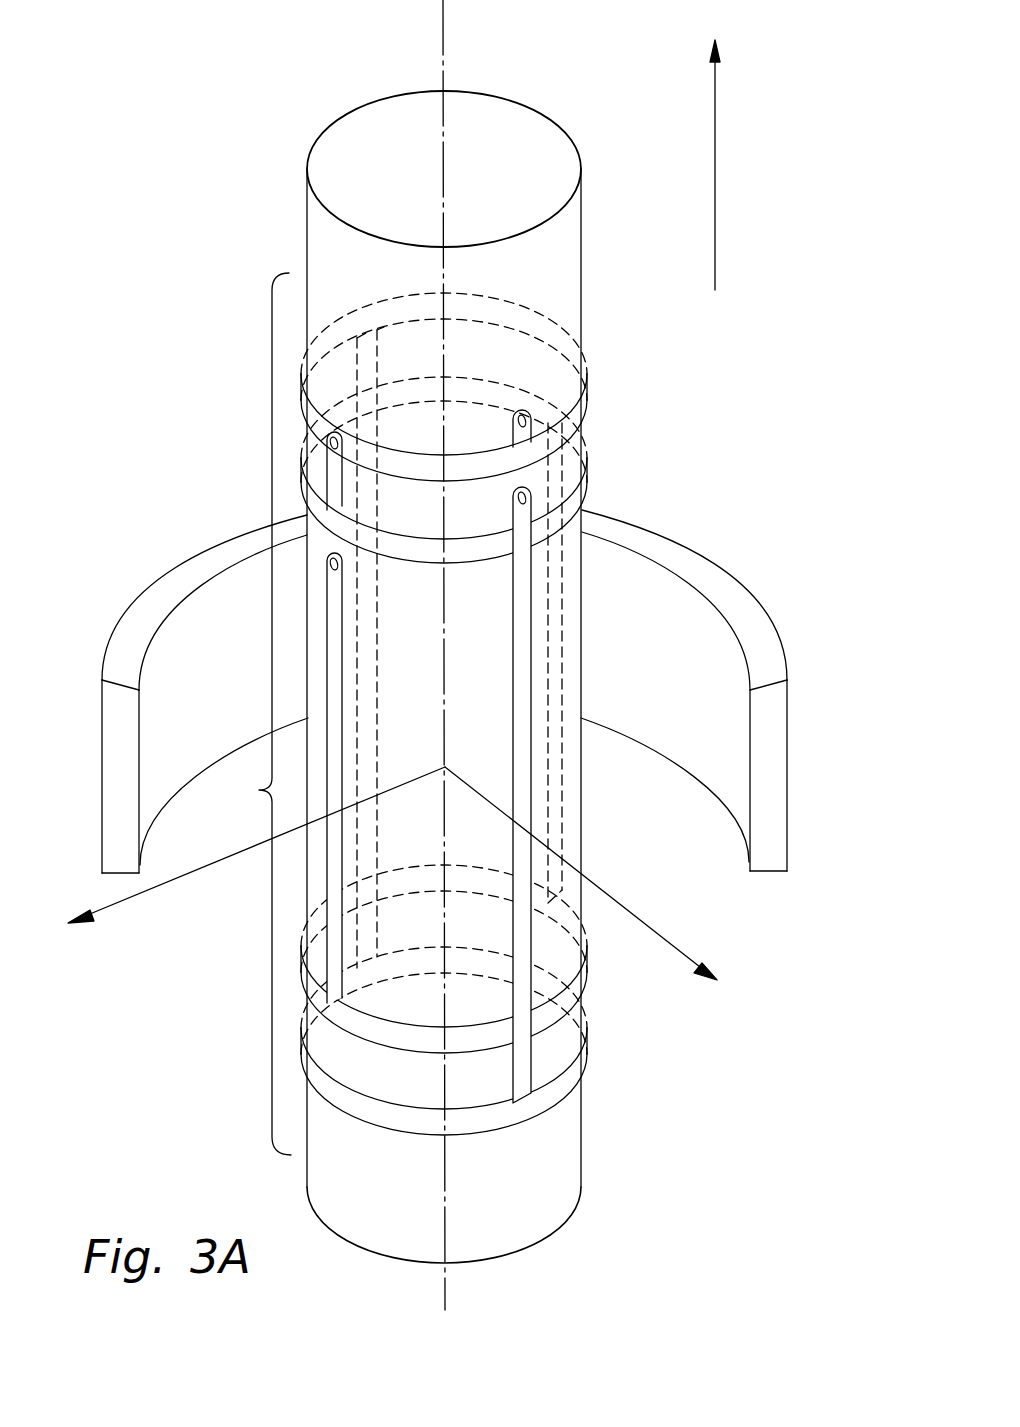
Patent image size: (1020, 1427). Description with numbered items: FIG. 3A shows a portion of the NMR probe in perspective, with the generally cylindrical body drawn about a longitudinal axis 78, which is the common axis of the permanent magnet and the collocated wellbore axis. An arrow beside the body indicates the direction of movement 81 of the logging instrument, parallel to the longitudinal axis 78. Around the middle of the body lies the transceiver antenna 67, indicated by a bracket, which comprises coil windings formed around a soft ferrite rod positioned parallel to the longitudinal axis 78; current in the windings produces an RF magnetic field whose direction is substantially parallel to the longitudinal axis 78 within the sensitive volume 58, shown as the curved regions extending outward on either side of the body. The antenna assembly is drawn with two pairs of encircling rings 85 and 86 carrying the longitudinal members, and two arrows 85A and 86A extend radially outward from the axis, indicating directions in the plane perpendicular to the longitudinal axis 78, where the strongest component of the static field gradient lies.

The longitudinal axis 78 is at (444, 30).
The direction of movement 81 is at (716, 166).
The ring 85 is at (588, 383).
The ring 86 is at (588, 484).
The transceiver antenna 67 is at (393, 714).
The sensitive volume 58 is at (100, 758).
The radial direction arrow 86A is at (103, 910).
The radial direction arrow 85A is at (680, 952).